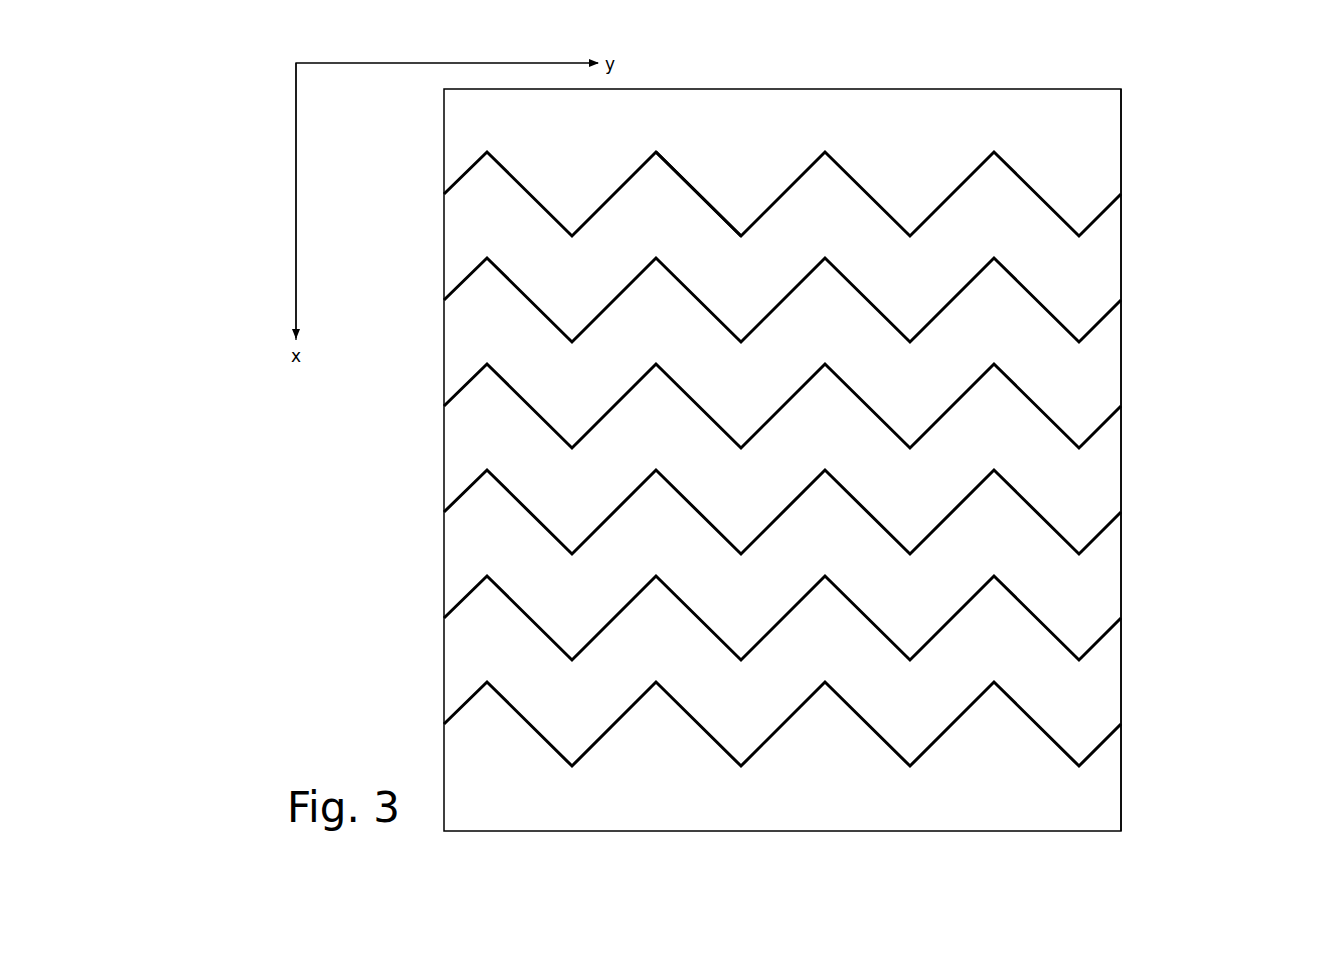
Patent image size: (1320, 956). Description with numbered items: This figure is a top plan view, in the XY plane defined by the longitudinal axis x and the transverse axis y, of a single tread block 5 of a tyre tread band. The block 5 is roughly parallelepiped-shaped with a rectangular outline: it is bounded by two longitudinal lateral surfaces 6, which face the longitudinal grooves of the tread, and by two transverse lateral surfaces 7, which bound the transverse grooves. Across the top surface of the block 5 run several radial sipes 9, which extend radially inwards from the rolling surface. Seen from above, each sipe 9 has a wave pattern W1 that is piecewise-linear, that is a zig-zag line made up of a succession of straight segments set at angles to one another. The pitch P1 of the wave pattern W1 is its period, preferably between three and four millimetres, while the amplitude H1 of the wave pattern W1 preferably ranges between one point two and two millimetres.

The transverse lateral surface 7 is at (1070, 88).
The sipe 9 is at (1100, 428).
The longitudinal lateral surface 6 is at (1125, 572).
The block 5 is at (1231, 789).
The wave pattern W1 is at (693, 160).
The pitch P1 is at (910, 236).
The amplitude H1 is at (994, 152).